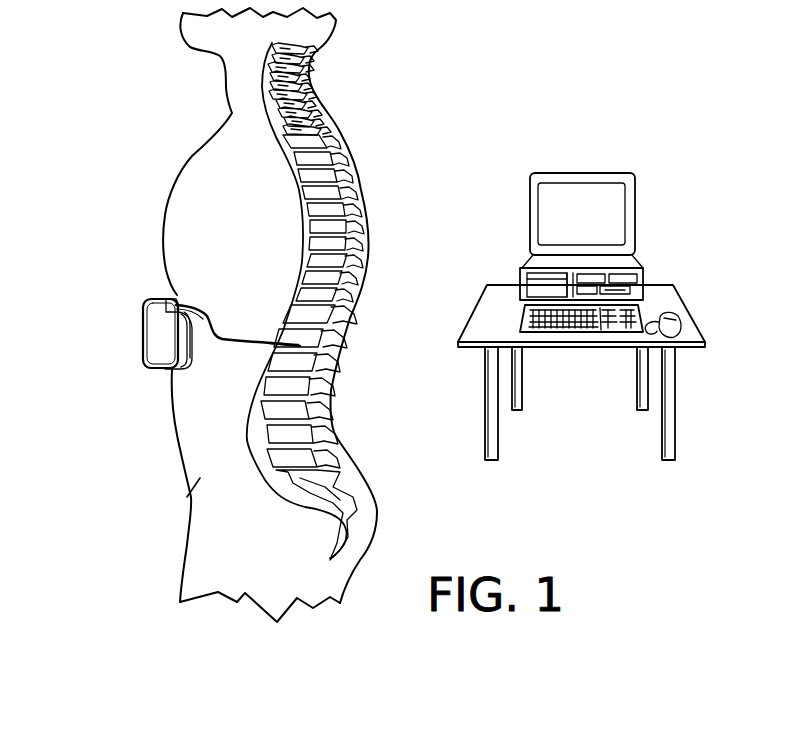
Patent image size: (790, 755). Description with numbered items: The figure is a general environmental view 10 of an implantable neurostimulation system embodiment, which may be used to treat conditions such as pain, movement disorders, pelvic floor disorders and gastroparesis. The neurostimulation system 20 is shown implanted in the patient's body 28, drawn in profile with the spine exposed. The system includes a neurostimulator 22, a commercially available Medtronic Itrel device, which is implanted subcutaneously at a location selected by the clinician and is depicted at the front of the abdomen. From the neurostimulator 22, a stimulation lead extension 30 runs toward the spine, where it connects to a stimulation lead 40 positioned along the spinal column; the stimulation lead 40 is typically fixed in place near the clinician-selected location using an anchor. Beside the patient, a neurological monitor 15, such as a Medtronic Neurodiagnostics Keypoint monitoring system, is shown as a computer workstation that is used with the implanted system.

The general environmental view 10 is at (217, 313).
The neurological monitor 15 is at (613, 160).
The neurostimulation system 20 is at (140, 284).
The neurostimulator 22 is at (167, 340).
The patient's body 28 is at (203, 190).
The stimulation lead extension 30 is at (214, 347).
The stimulation lead 40 is at (247, 347).